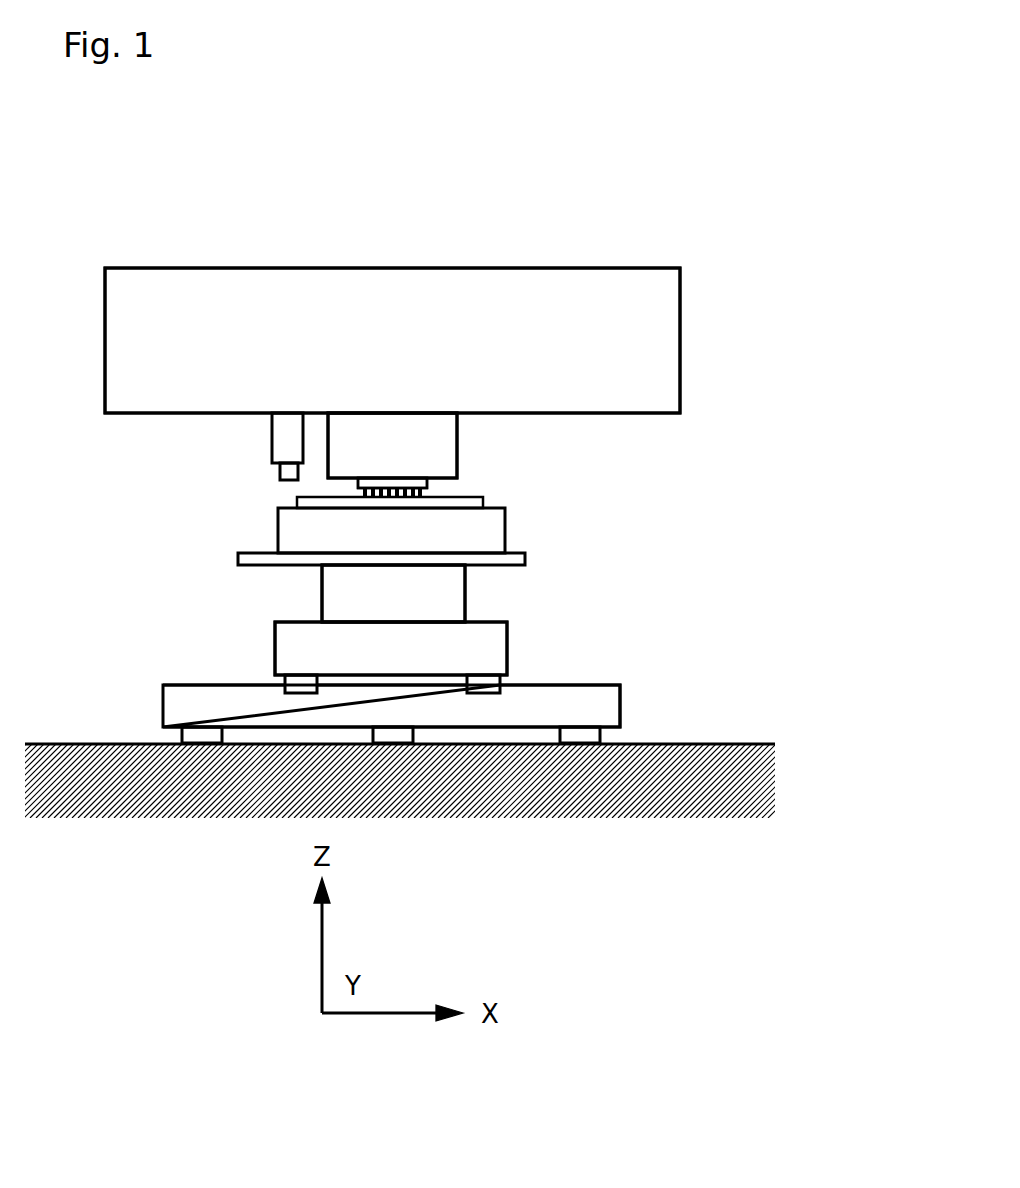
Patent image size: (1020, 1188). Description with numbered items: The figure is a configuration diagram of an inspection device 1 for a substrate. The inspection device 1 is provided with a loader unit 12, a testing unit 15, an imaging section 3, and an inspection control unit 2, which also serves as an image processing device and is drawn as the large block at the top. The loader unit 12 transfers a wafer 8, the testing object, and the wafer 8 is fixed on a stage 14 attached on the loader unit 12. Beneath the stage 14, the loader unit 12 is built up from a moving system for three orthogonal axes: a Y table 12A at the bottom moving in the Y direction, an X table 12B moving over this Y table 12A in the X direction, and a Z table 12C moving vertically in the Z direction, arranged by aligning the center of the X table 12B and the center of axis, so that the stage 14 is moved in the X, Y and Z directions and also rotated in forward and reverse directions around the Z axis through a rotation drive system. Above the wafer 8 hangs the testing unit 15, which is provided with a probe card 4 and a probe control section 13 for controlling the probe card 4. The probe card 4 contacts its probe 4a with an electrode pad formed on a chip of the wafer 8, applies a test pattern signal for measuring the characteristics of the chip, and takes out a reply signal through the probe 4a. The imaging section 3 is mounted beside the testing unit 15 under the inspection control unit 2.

The inspection device 1 is at (583, 183).
The inspection control unit 2 is at (680, 352).
The imaging section 3 is at (272, 443).
The probe card 4 is at (427, 487).
The probe 4a is at (358, 489).
The wafer 8 is at (483, 498).
The loader unit 12 is at (798, 557).
The Y table 12A is at (620, 701).
The X table 12B is at (507, 643).
The Z table 12C is at (465, 589).
The probe control section 13 is at (457, 445).
The stage 14 is at (278, 532).
The testing unit 15 is at (612, 418).